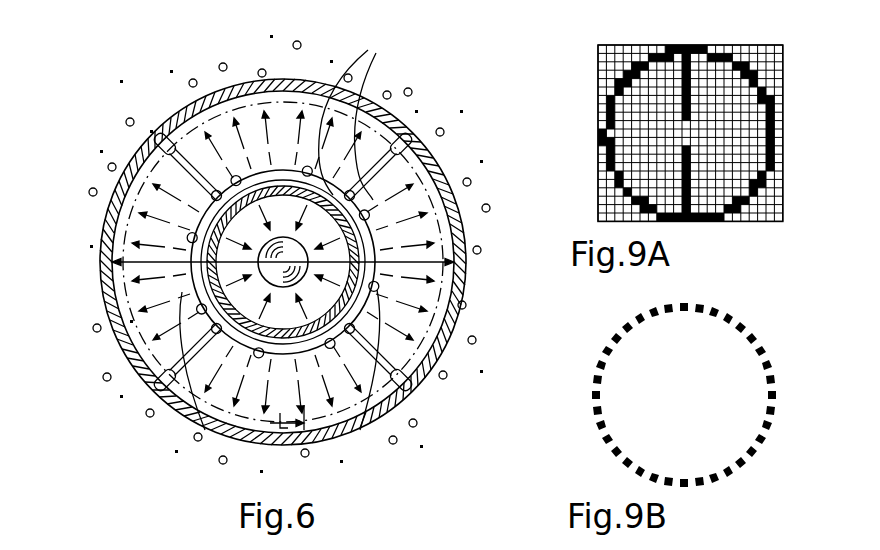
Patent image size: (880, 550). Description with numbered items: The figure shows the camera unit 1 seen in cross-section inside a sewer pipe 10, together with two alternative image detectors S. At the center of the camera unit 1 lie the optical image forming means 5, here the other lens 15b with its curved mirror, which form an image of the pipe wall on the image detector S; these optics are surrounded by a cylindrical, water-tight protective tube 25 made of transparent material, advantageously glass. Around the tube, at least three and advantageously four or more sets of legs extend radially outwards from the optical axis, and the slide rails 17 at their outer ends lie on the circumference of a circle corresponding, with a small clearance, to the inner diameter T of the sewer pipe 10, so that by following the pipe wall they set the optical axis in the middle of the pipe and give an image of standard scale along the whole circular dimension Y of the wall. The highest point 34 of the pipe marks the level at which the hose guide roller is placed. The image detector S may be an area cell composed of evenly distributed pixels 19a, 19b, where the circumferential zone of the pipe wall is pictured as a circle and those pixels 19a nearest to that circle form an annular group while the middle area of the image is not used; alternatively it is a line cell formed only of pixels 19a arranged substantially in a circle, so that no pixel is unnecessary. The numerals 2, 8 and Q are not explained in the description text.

In FIG. 6, the camera unit 1 is at (258, 266).
In FIG. 6, the flow guide curves 2 is at (282, 231).
In FIG. 6, the optical image forming means 5 is at (262, 252).
In FIG. 6, the other lens 15b is at (283, 262).
In FIG. 6, the hub ring bumps 8 is at (183, 293).
In FIG. 6, the sewer pipe 10 is at (443, 165).
In FIG. 6, the slide rails 17 is at (406, 381).
In FIG. 6, the protective tube 25 is at (368, 283).
In FIG. 6, the highest point of the sewer pipe 34 is at (272, 100).
In FIG. 9A, the pixels 19a is at (765, 215).
In FIG. 9B, the pixels 19a is at (752, 350).
In FIG. 9A, the pixels 19b is at (612, 198).
In FIG. 6, the inner diameter of the sewer pipe T is at (283, 252).
In FIG. 6, the circular dimension of the wall Y is at (287, 412).
In FIG. 6, the bubbles Q is at (103, 134).
In FIG. 9A, the image detector S is at (700, 230).